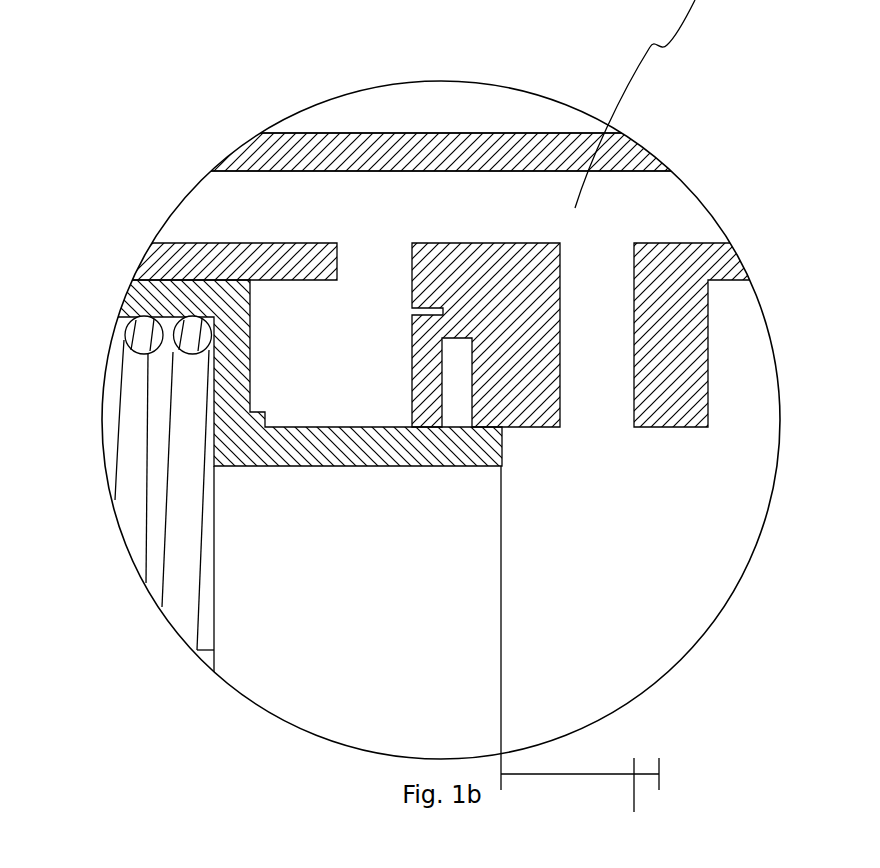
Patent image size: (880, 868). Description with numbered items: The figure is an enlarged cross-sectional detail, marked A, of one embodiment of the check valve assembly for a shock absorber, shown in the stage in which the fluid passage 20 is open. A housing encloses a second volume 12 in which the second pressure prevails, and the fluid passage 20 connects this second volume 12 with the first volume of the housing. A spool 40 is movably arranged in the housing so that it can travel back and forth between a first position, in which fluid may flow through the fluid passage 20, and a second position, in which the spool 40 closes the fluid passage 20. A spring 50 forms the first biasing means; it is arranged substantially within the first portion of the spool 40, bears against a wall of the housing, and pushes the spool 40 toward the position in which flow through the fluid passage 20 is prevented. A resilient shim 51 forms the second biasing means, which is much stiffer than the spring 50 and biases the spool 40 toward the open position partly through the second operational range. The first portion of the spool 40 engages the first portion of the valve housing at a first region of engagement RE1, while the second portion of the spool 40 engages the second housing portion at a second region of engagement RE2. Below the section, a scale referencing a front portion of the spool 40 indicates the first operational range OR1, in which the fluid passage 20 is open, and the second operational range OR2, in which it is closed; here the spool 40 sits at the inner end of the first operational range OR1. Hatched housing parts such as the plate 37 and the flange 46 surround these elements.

The second volume 12 is at (590, 478).
The fluid passage 20 is at (587, 357).
The top plate 37 is at (380, 0).
The spool 40 is at (227, 0).
The flange 46 is at (192, 0).
The spring 50 is at (175, 327).
The resilient shim 51 is at (262, 0).
The first region of engagement RE1 is at (374, 250).
The second region of engagement RE2 is at (337, 0).
The detail A is at (730, 641).
The first operational range OR1 is at (567, 786).
The second operational range OR2 is at (658, 786).